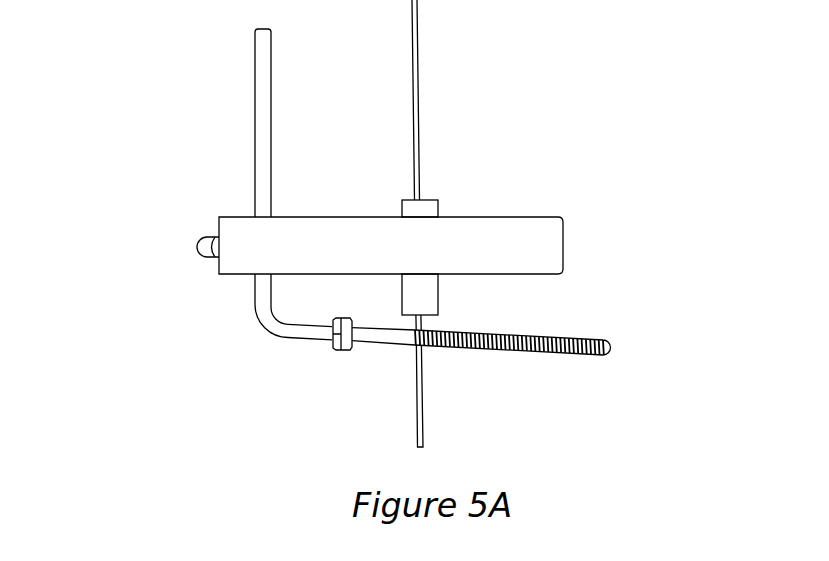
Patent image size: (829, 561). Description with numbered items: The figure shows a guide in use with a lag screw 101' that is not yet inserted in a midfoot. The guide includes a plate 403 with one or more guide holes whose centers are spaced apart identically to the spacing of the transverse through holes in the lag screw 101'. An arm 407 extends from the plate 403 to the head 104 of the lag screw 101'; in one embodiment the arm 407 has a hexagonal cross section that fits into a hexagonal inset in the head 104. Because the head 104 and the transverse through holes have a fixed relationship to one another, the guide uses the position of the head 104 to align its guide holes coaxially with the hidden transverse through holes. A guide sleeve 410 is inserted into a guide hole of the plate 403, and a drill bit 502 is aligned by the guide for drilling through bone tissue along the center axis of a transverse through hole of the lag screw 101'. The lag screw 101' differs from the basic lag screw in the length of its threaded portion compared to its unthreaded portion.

The plate 403 is at (568, 248).
The arm 407 is at (263, 72).
The guide sleeve 410 is at (432, 198).
The drill bit 502 is at (432, 412).
The head 104 is at (342, 350).
The lag screw 101' is at (546, 389).